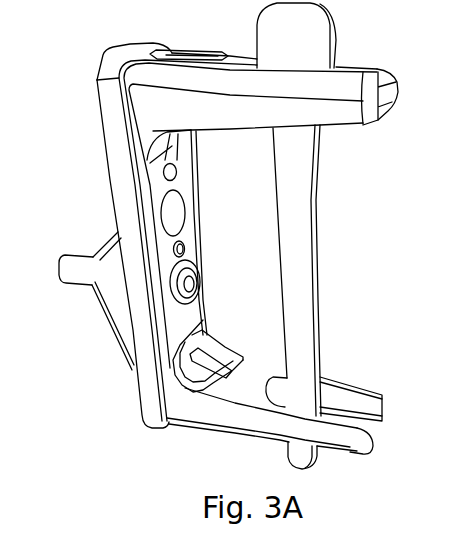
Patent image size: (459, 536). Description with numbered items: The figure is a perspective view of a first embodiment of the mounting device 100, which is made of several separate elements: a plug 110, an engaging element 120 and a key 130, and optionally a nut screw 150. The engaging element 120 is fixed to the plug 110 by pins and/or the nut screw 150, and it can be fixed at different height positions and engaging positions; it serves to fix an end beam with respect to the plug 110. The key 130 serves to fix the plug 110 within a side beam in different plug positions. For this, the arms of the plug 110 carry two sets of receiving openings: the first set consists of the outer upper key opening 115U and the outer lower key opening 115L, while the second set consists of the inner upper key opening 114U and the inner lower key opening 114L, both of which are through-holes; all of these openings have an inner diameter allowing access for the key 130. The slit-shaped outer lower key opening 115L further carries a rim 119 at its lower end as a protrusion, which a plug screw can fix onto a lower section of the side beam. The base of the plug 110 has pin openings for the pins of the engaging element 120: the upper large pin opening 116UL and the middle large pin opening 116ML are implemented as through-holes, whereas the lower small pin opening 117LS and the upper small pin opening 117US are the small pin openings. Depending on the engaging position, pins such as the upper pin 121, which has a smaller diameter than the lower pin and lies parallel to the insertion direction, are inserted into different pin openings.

The mounting device 100 is at (92, 413).
The plug 110 is at (108, 145).
The inner upper key opening 114U is at (188, 58).
The inner lower key opening 114L is at (218, 372).
The outer upper key opening 115U is at (338, 63).
The outer lower key opening 115L is at (352, 420).
The upper large pin opening 116UL is at (178, 212).
The middle large pin opening 116ML is at (203, 295).
The upper small pin opening 117US is at (176, 170).
The lower small pin opening 117LS is at (187, 250).
The rim 119 is at (384, 421).
The engaging element 120 is at (113, 336).
The upper pin 121 is at (189, 241).
The key 130 is at (316, 270).
The nut screw 150 is at (200, 269).